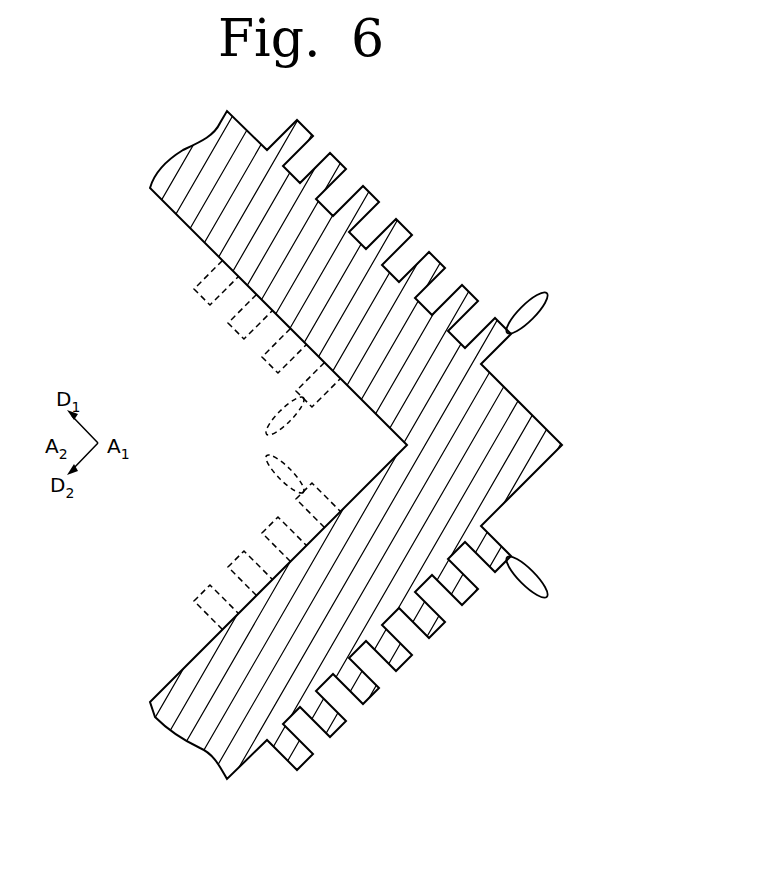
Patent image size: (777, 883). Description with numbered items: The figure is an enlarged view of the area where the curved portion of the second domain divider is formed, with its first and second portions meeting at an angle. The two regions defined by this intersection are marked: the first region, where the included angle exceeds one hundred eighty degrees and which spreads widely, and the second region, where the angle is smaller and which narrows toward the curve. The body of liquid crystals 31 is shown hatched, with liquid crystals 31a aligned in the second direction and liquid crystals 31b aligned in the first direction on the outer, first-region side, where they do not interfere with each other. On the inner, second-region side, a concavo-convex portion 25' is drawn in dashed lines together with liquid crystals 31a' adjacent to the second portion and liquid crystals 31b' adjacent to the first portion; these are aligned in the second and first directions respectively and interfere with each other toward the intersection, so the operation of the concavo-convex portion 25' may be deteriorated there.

The liquid crystals 31 is at (643, 305).
The liquid crystals aligned in the second direction 31a is at (574, 313).
The liquid crystals aligned in the first direction 31b is at (574, 577).
The concavo-convex portion 25' is at (222, 445).
The liquid crystals adjacent to the second portion 31a' is at (255, 403).
The liquid crystals adjacent to the first portion 31b' is at (239, 452).